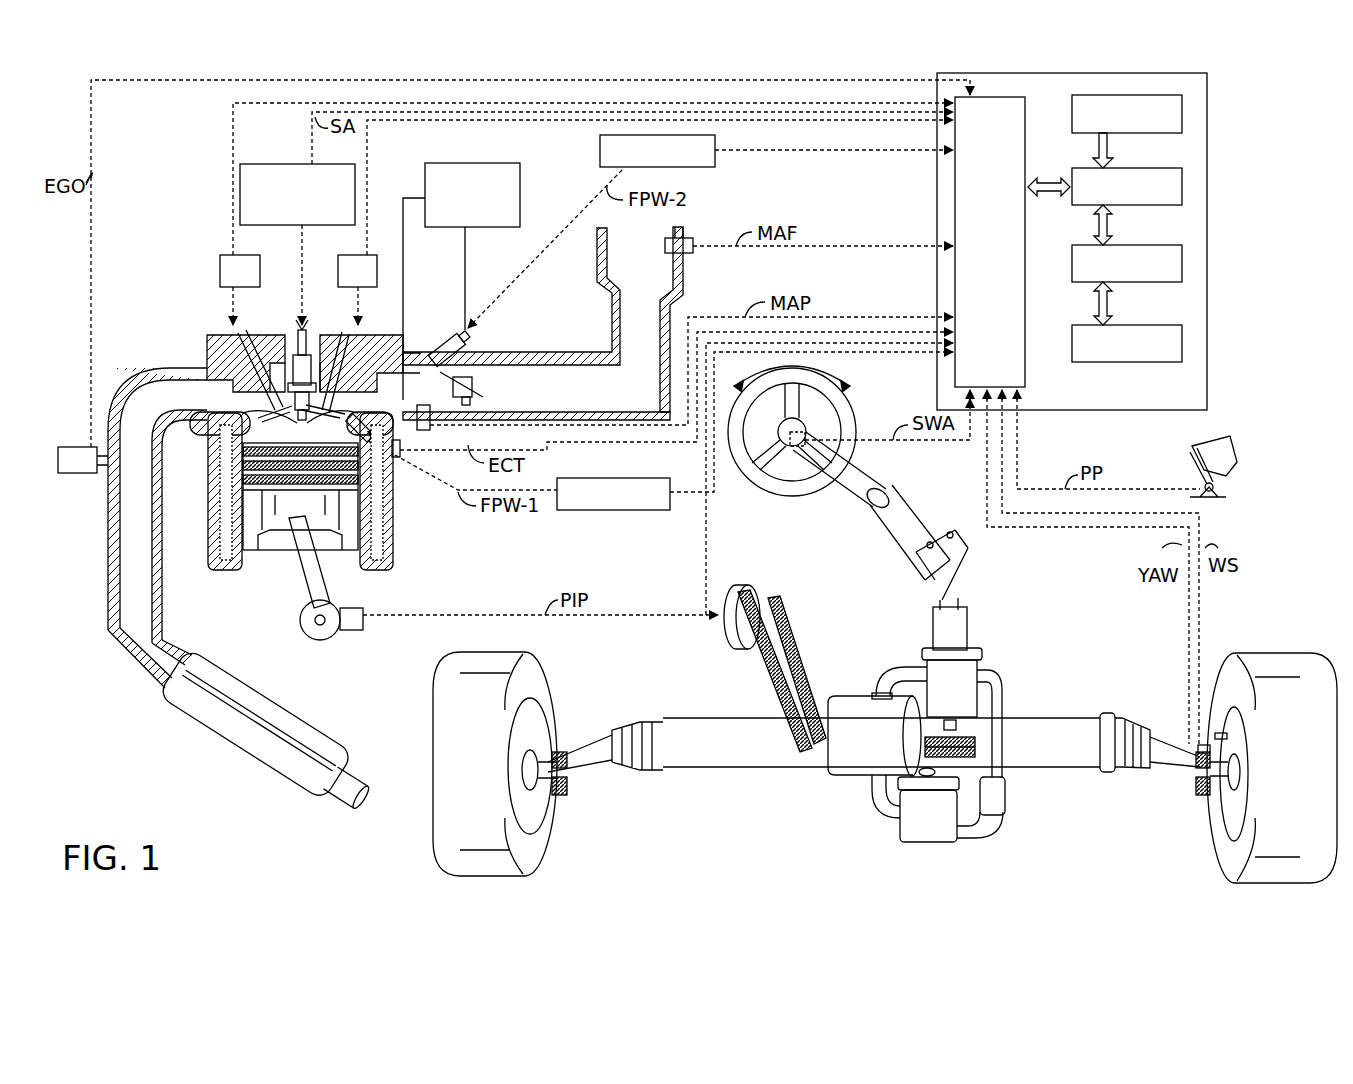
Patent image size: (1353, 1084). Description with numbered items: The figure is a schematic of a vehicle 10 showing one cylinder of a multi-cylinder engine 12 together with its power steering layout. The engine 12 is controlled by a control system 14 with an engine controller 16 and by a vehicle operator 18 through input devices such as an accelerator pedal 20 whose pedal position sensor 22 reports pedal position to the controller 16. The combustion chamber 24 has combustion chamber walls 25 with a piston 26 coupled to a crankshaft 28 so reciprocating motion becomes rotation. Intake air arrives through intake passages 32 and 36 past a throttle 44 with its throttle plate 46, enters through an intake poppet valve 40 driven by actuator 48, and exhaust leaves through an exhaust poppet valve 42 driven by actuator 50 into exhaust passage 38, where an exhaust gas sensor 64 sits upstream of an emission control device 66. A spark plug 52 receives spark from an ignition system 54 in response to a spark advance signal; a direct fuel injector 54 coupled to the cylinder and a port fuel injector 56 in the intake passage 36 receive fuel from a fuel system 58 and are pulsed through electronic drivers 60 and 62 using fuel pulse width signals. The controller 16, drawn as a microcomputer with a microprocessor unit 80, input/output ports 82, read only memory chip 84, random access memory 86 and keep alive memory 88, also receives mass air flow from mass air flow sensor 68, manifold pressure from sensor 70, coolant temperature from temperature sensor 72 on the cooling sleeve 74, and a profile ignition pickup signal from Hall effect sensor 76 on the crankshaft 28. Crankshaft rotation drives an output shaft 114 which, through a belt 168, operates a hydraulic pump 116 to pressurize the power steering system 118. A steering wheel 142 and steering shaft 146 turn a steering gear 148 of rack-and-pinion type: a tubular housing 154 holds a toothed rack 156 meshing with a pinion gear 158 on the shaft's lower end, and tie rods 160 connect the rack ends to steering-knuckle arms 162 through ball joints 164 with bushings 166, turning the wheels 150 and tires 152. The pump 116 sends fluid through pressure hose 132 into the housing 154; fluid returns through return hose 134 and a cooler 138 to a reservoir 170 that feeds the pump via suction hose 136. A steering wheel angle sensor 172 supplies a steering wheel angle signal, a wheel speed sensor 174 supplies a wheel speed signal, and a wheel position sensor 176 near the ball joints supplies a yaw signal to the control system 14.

The vehicle 10 is at (180, 190).
The multi-cylinder engine 12 is at (170, 296).
The control system 14 is at (1265, 98).
The engine controller 16 is at (1182, 395).
The vehicle operator 18 is at (1237, 455).
The accelerator pedal 20 is at (1190, 452).
The pedal position sensor 22 is at (1218, 490).
The combustion chamber 24 is at (262, 415).
The combustion chamber walls 25 is at (245, 565).
The piston 26 is at (297, 520).
The crankshaft 28 is at (310, 638).
The intake passage 32 is at (645, 343).
The intake air passage 36 is at (428, 400).
The exhaust passage 38 is at (188, 405).
The intake poppet valve 40 is at (330, 338).
The exhaust poppet valve 42 is at (255, 400).
The throttle 44 is at (462, 378).
The throttle plate 46 is at (478, 397).
The actuator 48 is at (369, 281).
The actuator 50 is at (251, 281).
The spark plug 52 is at (290, 348).
The ignition system / fuel injector 54 is at (353, 208).
The fuel injector 56 is at (445, 342).
The fuel system 58 is at (513, 193).
The electronic driver 60 is at (663, 505).
The electronic driver 62 is at (706, 162).
The exhaust gas sensor 64 is at (85, 445).
The emission control device 66 is at (297, 718).
The mass air flow sensor 68 is at (684, 236).
The manifold pressure sensor 70 is at (425, 430).
The temperature sensor 72 is at (402, 452).
The cooling sleeve 74 is at (380, 548).
The Hall effect sensor 76 is at (350, 630).
The microprocessor unit 80 is at (1168, 197).
The input/output ports 82 is at (1003, 340).
The read only memory chip 84 is at (1168, 125).
The random access memory 86 is at (1168, 274).
The keep alive memory 88 is at (1168, 354).
The output shaft 114 is at (750, 600).
The hydraulic pump 116 is at (884, 736).
The power steering system 118 is at (1000, 572).
The pressure hose 132 is at (905, 660).
The return hose 134 is at (995, 838).
The suction hose 136 is at (870, 800).
The cooler 138 is at (1002, 790).
The steering wheel 142 is at (814, 431).
The steering shaft 146 is at (880, 490).
The steering gear 148 is at (1018, 648).
The wheels 150 is at (535, 830).
The tires 152 is at (540, 672).
The tubular housing 154 is at (1035, 718).
The toothed rack 156 is at (977, 747).
The pinion gear 158 is at (958, 728).
The tie rods 160 is at (604, 735).
The steering-knuckle arms 162 is at (545, 785).
The ball joints 164 is at (570, 772).
The bushings 166 is at (568, 790).
The belt 168 is at (790, 650).
The reservoir 170 is at (928, 842).
The steering wheel angle sensor 172 is at (800, 435).
The wheel speed sensor 174 is at (1220, 733).
The wheel position sensor 176 is at (1200, 745).